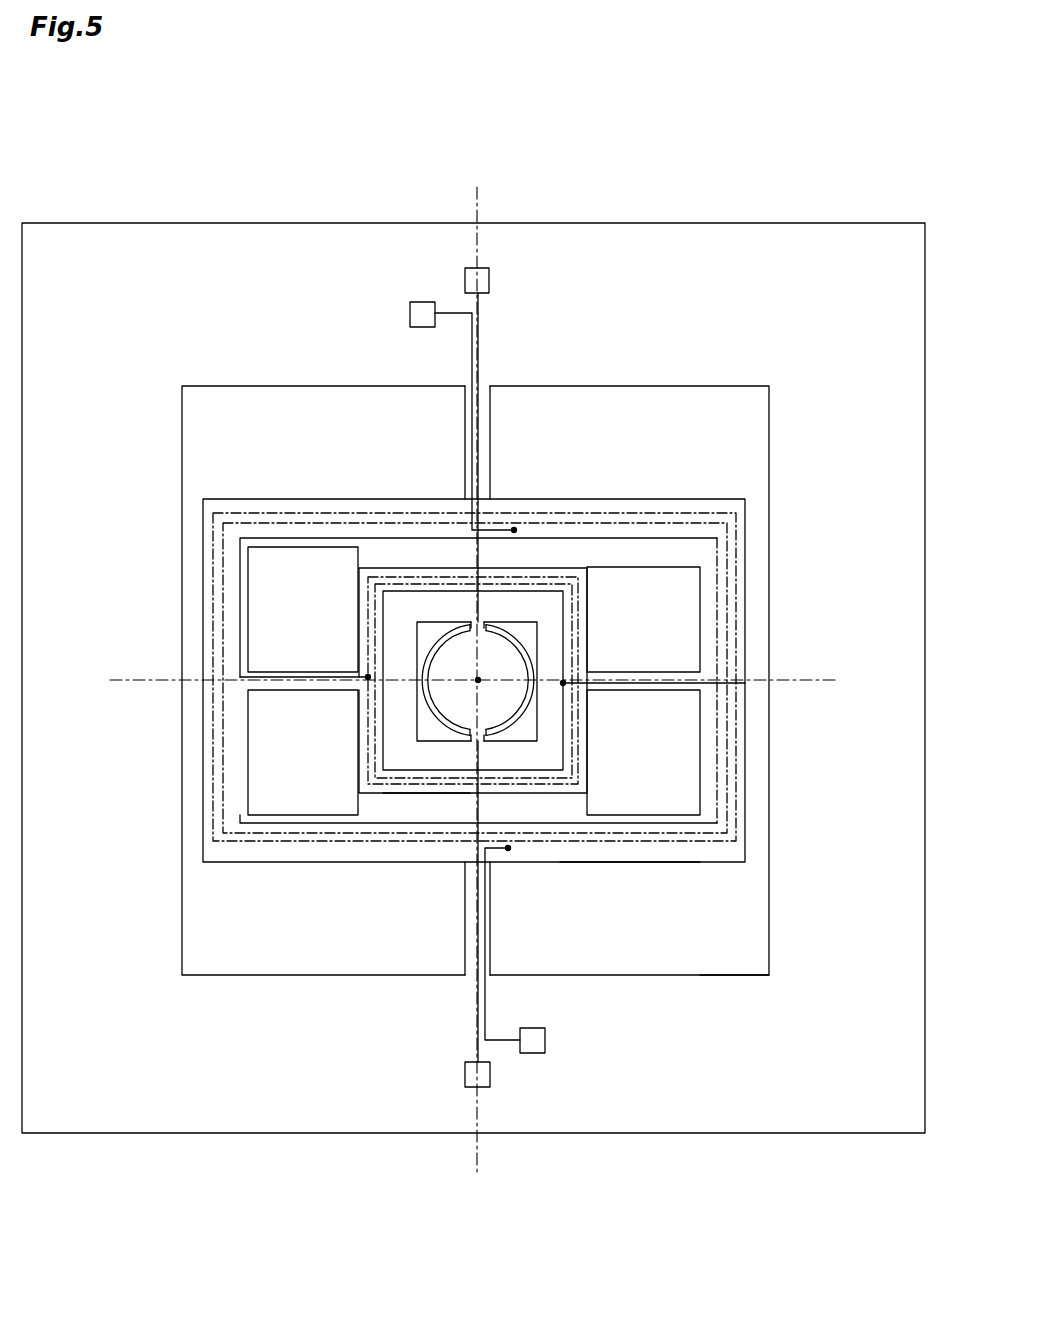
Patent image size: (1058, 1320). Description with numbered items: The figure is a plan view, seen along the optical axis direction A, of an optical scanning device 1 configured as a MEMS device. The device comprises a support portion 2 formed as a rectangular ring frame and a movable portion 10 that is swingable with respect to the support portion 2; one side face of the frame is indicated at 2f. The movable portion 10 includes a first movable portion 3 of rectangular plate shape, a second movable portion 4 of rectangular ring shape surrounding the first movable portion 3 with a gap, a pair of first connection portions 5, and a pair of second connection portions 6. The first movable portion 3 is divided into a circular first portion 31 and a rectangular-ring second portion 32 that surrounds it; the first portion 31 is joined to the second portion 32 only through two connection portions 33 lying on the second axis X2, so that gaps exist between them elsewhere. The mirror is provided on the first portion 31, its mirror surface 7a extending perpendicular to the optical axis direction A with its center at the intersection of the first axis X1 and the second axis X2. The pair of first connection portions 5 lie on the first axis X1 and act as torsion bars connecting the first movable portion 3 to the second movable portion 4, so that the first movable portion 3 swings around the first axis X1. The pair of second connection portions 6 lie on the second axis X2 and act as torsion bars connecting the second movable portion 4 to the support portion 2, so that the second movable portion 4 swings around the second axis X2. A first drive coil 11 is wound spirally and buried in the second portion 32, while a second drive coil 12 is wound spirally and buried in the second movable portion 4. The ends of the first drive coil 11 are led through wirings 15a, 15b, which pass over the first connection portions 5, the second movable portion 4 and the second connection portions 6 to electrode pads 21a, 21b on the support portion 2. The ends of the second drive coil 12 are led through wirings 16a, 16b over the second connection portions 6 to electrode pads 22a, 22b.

The optical scanning device 1 is at (764, 136).
The support portion 2 is at (203, 1133).
The side face of element body 2f is at (733, 975).
The first movable portion 3 is at (360, 738).
The second movable portion 4 is at (283, 862).
The first connection portion 5 is at (297, 672).
The second connection portion 6 is at (490, 440).
The mirror surface 7a is at (508, 703).
The movable portion 10 is at (612, 421).
The first drive coil 11 is at (405, 793).
The second drive coil 12 is at (623, 857).
The wiring 15a is at (222, 598).
The wiring 15b is at (722, 758).
The wiring 16a is at (472, 345).
The wiring 16b is at (485, 1000).
The electrode pad 21a is at (480, 266).
The electrode pad 21b is at (480, 1088).
The electrode pad 22a is at (410, 313).
The electrode pad 22b is at (545, 1040).
The first portion 31 is at (516, 640).
The second portion 32 is at (358, 592).
The connection portion 33 is at (480, 622).
The optical axis direction A is at (476, 682).
The first axis X1 is at (820, 678).
The second axis X2 is at (477, 1150).